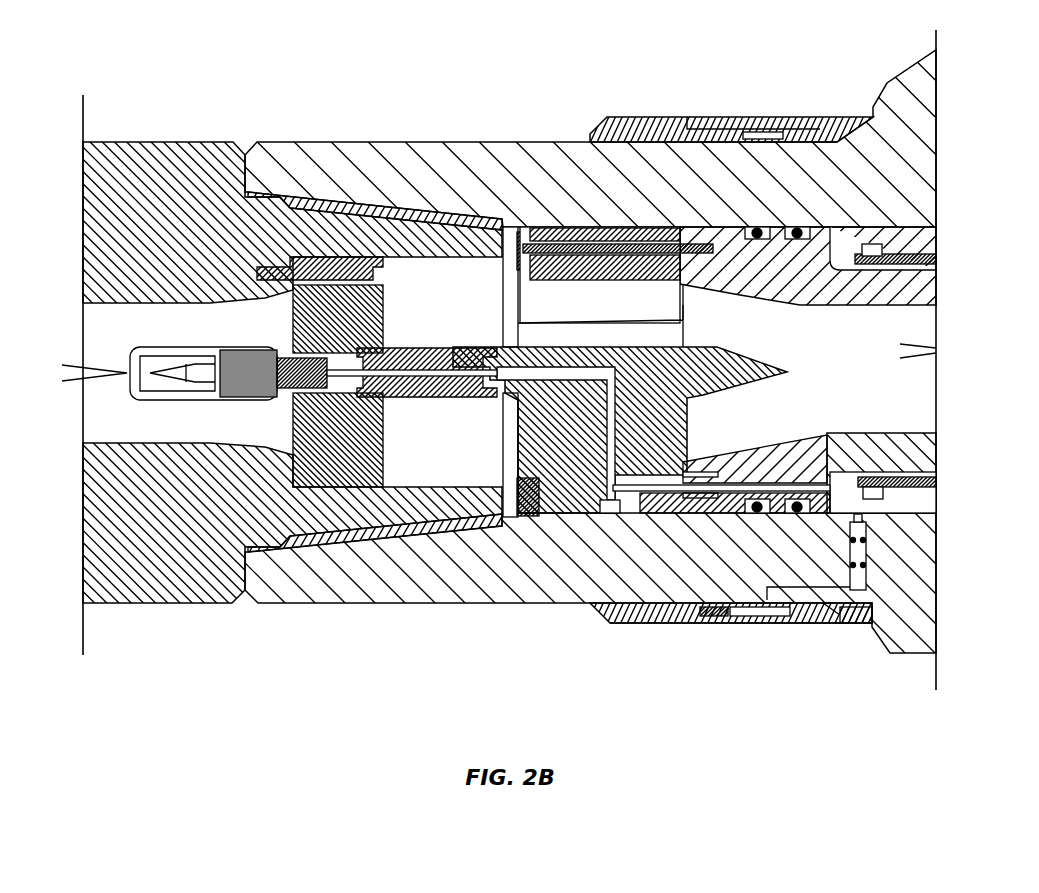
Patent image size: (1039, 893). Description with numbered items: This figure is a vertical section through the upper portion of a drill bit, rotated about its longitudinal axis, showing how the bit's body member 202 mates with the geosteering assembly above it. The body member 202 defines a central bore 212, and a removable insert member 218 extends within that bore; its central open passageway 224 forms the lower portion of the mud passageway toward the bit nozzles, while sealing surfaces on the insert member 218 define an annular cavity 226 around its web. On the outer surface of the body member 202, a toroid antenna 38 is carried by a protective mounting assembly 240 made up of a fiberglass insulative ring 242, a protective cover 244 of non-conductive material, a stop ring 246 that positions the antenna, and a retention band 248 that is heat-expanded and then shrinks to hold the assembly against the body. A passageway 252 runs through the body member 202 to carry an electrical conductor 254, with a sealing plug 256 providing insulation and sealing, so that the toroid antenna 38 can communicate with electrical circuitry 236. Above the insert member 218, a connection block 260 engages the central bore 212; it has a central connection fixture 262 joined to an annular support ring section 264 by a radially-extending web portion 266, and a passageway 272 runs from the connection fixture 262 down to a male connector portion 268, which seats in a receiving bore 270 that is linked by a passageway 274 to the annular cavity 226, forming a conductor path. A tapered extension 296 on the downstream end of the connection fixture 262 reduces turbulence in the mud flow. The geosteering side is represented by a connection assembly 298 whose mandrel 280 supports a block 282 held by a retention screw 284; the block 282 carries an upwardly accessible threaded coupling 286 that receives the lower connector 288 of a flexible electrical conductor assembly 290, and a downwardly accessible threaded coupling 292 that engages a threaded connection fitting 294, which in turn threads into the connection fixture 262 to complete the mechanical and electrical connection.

The toroid antenna 38 is at (790, 614).
The body member 202 is at (657, 170).
The central bore 212 is at (897, 230).
The removable insert member 218 is at (930, 288).
The central open passageway 224 is at (905, 398).
The annular cavity 226 is at (920, 237).
The electrical circuitry 236 is at (917, 490).
The protective mounting assembly 240 is at (693, 672).
The fiberglass insulative ring 242 is at (845, 625).
The protective cover 244 is at (820, 625).
The stop ring 246 is at (745, 614).
The retention band 248 is at (607, 622).
The passageway 252 is at (882, 587).
The electrical conductor 254 is at (865, 528).
The sealing plug 256 is at (878, 563).
The connection block 260 is at (590, 313).
The connection fixture 262 is at (533, 337).
The annular support ring section 264 is at (660, 237).
The radially-extending arm or web portion 266 is at (527, 450).
The male connector portion 268 is at (717, 465).
The receiving bore 270 is at (700, 515).
The passageway 272 is at (583, 420).
The passageway 274 is at (815, 475).
The mandrel 280 is at (205, 160).
The block 282 is at (337, 480).
The retention screw 284 is at (315, 262).
The threaded coupling 286 is at (292, 462).
The lower connector 288 is at (175, 400).
The flexible electrical conductor assembly 290 is at (93, 390).
The threaded coupling 292 is at (397, 350).
The threaded connection fitting 294 is at (460, 375).
The tapered extension 296 is at (740, 345).
The connection assembly 298 is at (143, 141).